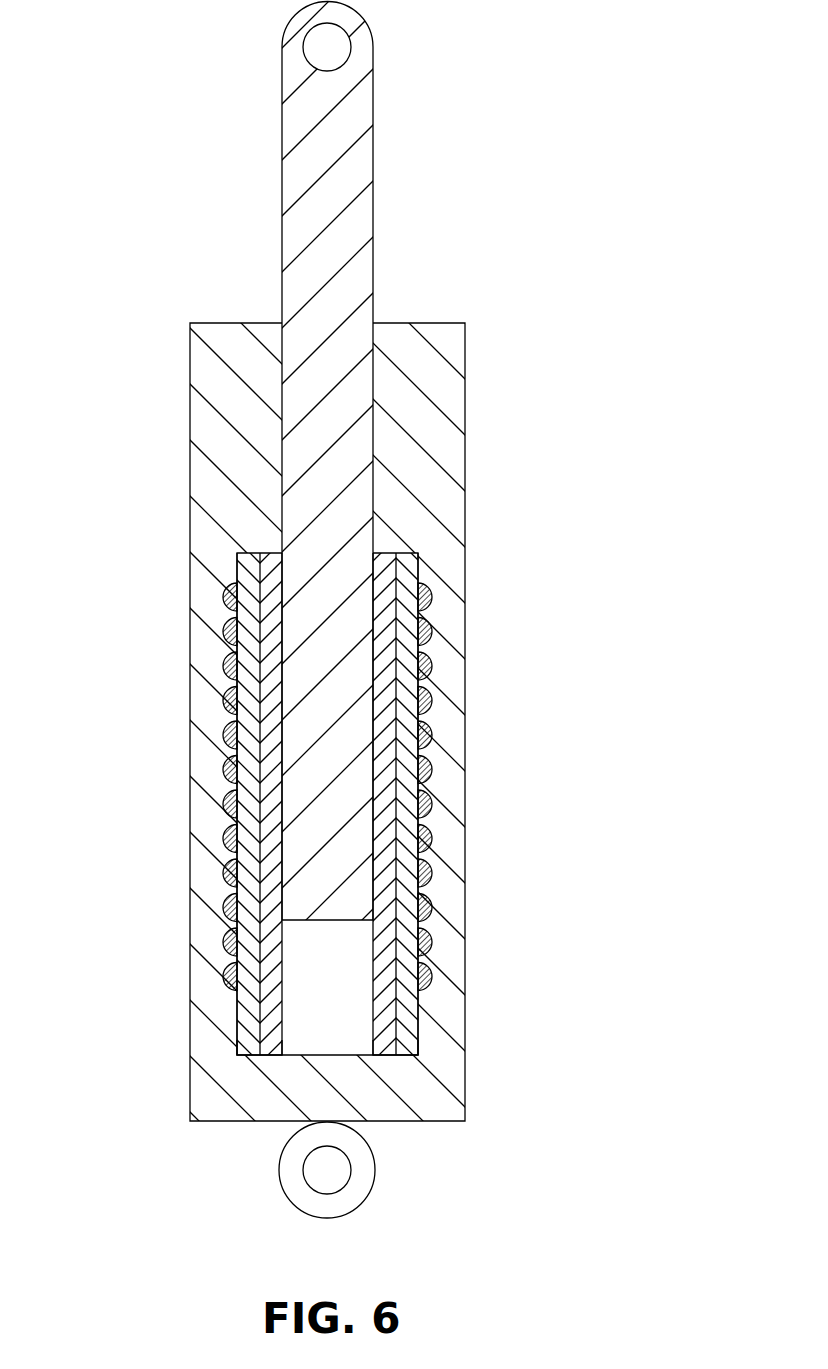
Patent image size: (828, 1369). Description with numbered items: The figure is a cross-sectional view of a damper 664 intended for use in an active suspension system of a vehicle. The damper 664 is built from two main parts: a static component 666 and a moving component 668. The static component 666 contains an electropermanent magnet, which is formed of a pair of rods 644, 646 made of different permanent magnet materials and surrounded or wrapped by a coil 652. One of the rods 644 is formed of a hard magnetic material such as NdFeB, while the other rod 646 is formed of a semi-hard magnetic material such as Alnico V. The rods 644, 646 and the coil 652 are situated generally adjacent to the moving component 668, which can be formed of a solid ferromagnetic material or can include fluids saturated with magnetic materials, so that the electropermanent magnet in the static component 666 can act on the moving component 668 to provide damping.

The damper 664 is at (371, 684).
The static component 666 is at (450, 322).
The moving component 668 is at (373, 110).
The rod 644 is at (252, 553).
The coil 652 is at (433, 732).
The rod 646 is at (270, 1057).